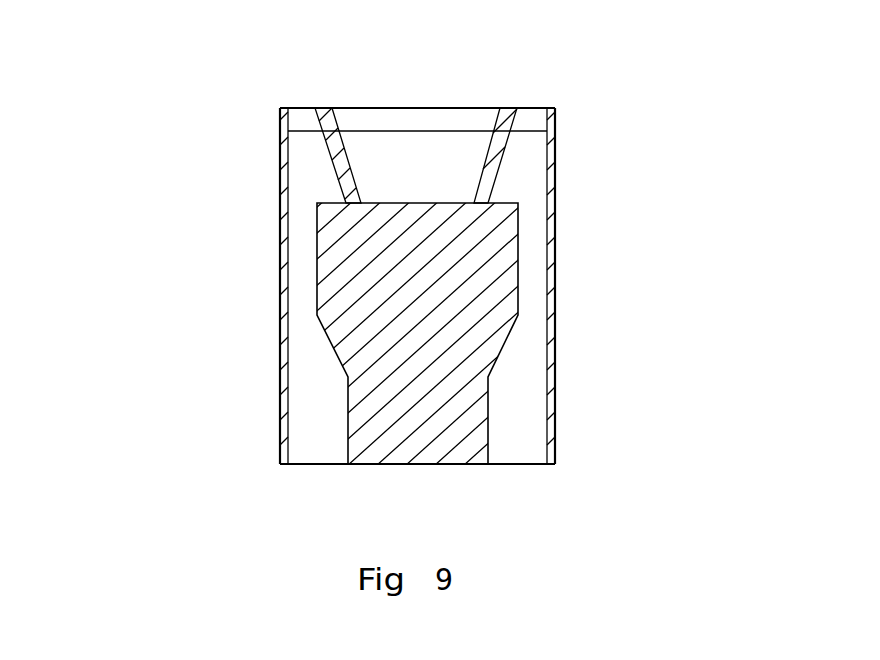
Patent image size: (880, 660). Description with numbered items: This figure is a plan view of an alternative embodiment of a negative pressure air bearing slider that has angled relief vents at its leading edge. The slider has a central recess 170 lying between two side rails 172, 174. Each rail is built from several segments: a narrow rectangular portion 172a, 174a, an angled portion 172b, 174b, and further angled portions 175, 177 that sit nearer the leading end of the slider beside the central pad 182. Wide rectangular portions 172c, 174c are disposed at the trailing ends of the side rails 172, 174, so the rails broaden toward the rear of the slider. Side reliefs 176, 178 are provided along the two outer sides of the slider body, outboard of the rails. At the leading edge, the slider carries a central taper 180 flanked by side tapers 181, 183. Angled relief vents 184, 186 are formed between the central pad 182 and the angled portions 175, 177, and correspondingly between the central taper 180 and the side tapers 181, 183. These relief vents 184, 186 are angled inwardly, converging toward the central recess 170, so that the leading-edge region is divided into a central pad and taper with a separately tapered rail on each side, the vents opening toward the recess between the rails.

The central recess 170 is at (450, 382).
The side rail 172 is at (343, 437).
The narrow rectangular portion 172a is at (303, 265).
The angled portion 172b is at (313, 357).
The wide rectangular portion 172c is at (305, 403).
The side rail 174 is at (540, 434).
The narrow rectangular portion 174a is at (537, 267).
The angled portion 174b is at (512, 353).
The wide rectangular portion 174c is at (518, 445).
The angled portion 175 is at (307, 158).
The side relief 176 is at (308, 198).
The angled portion 177 is at (532, 157).
The side relief 178 is at (557, 223).
The central taper 180 is at (383, 117).
The side taper 181 is at (302, 117).
The central pad 182 is at (443, 183).
The side taper 183 is at (533, 120).
The angled relief vent 184 is at (325, 120).
The angled relief vent 186 is at (510, 112).